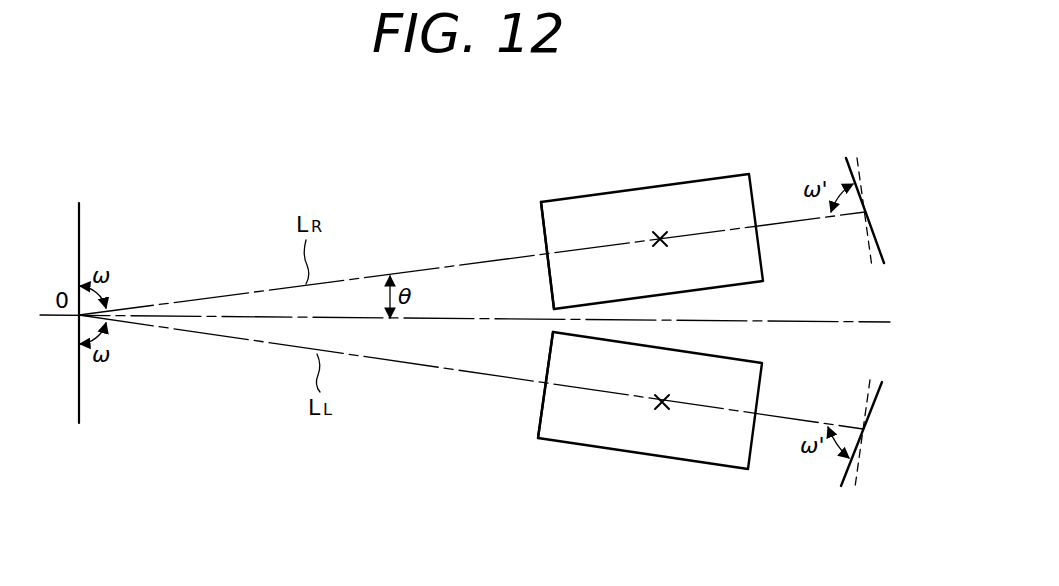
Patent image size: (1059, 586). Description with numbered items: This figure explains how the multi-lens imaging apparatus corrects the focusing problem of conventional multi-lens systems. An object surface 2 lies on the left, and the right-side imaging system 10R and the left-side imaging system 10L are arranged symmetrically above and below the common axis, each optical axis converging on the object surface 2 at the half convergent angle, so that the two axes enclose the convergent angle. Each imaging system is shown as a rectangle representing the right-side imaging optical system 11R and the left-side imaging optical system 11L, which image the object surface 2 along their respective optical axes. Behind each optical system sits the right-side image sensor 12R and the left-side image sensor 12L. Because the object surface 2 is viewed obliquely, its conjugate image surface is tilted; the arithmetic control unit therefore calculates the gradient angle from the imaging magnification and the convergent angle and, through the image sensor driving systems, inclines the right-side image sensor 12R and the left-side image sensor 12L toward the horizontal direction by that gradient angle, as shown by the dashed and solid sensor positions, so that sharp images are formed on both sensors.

The object surface 2 is at (79, 233).
The right-side imaging system 10R is at (625, 176).
The left-side imaging system 10L is at (598, 464).
The right-side imaging optical system 11R is at (559, 200).
The left-side imaging optical system 11L is at (549, 442).
The right-side image sensor 12R is at (844, 170).
The left-side image sensor 12L is at (842, 478).